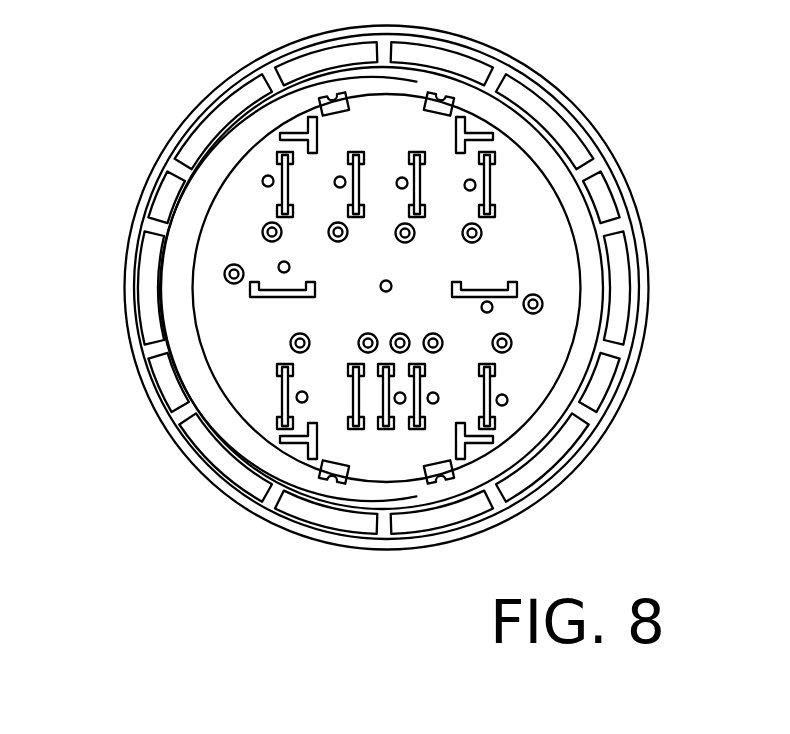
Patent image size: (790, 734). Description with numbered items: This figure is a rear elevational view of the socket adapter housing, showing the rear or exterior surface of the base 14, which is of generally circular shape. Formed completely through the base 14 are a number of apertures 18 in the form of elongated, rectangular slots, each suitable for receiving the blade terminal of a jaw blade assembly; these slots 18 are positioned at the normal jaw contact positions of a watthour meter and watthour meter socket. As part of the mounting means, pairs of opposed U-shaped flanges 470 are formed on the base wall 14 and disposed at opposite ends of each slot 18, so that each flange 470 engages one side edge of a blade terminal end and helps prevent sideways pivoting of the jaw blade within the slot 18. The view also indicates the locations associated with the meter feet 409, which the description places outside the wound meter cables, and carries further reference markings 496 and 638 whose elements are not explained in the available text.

The base 14 is at (277, 213).
The apertures 18 is at (410, 202).
The meter feet 409 is at (296, 135).
The U-shaped flanges 470 is at (217, 237).
The mounting hole 496 is at (296, 397).
The locating tabs 638 is at (333, 100).